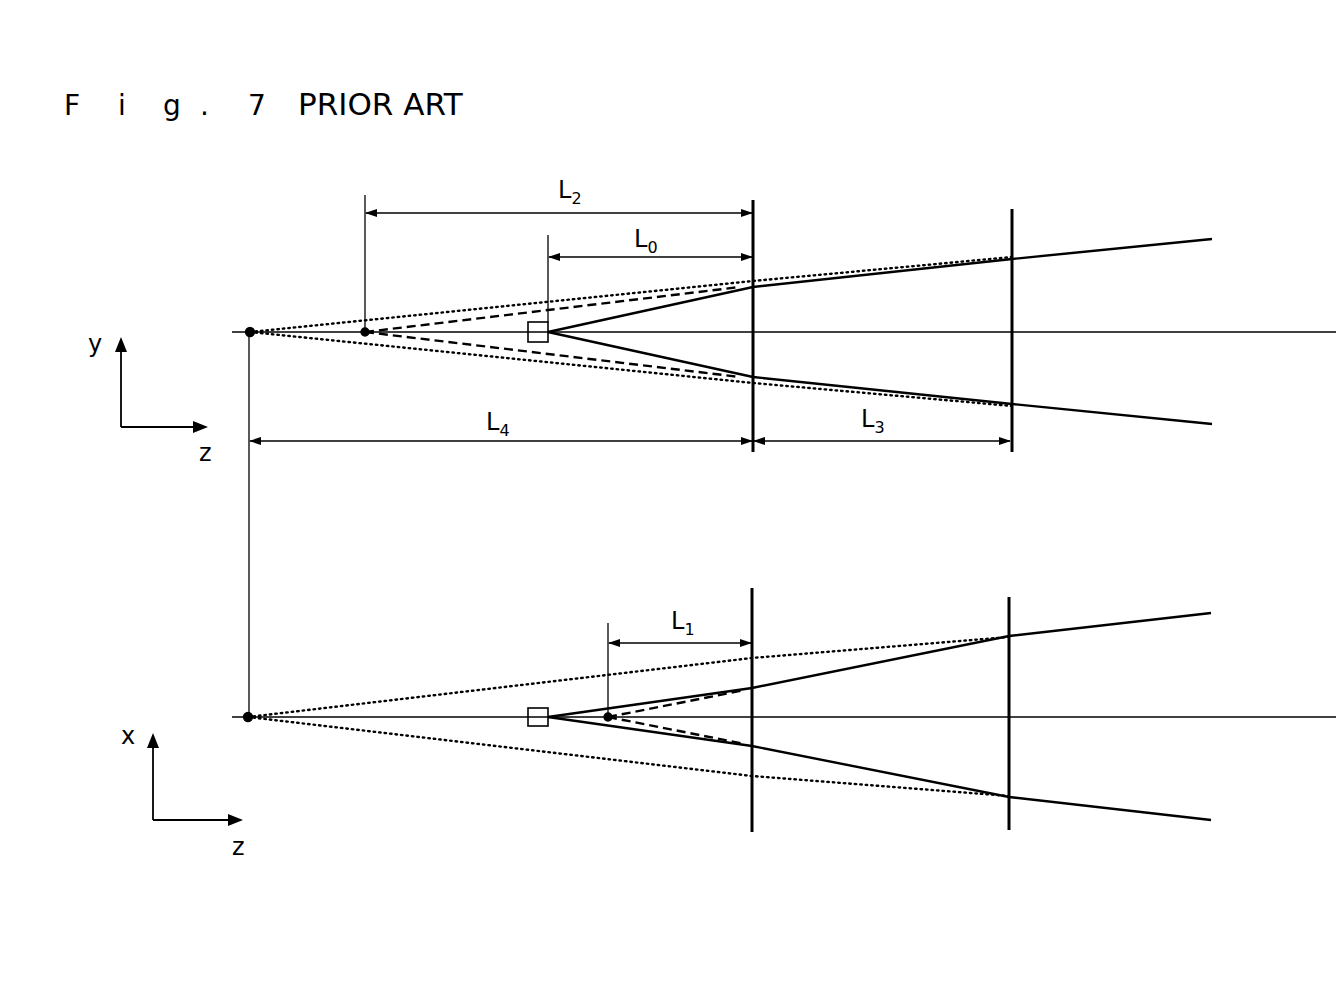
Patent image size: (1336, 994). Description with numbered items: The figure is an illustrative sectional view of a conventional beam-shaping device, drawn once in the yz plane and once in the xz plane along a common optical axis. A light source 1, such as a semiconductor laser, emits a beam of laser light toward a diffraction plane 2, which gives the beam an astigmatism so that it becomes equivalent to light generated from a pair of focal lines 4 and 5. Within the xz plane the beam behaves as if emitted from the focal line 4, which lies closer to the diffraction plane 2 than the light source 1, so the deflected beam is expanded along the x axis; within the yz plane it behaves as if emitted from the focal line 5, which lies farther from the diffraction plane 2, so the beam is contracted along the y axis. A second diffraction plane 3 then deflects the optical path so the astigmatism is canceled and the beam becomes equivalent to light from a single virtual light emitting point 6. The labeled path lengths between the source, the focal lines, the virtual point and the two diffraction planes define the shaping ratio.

The light source 1 is at (540, 340).
The diffraction plane 2 is at (756, 212).
The diffraction plane 3 is at (1014, 212).
The focal line 4 is at (605, 723).
The focal line 5 is at (364, 338).
The virtual light emitting point 6 is at (252, 330).